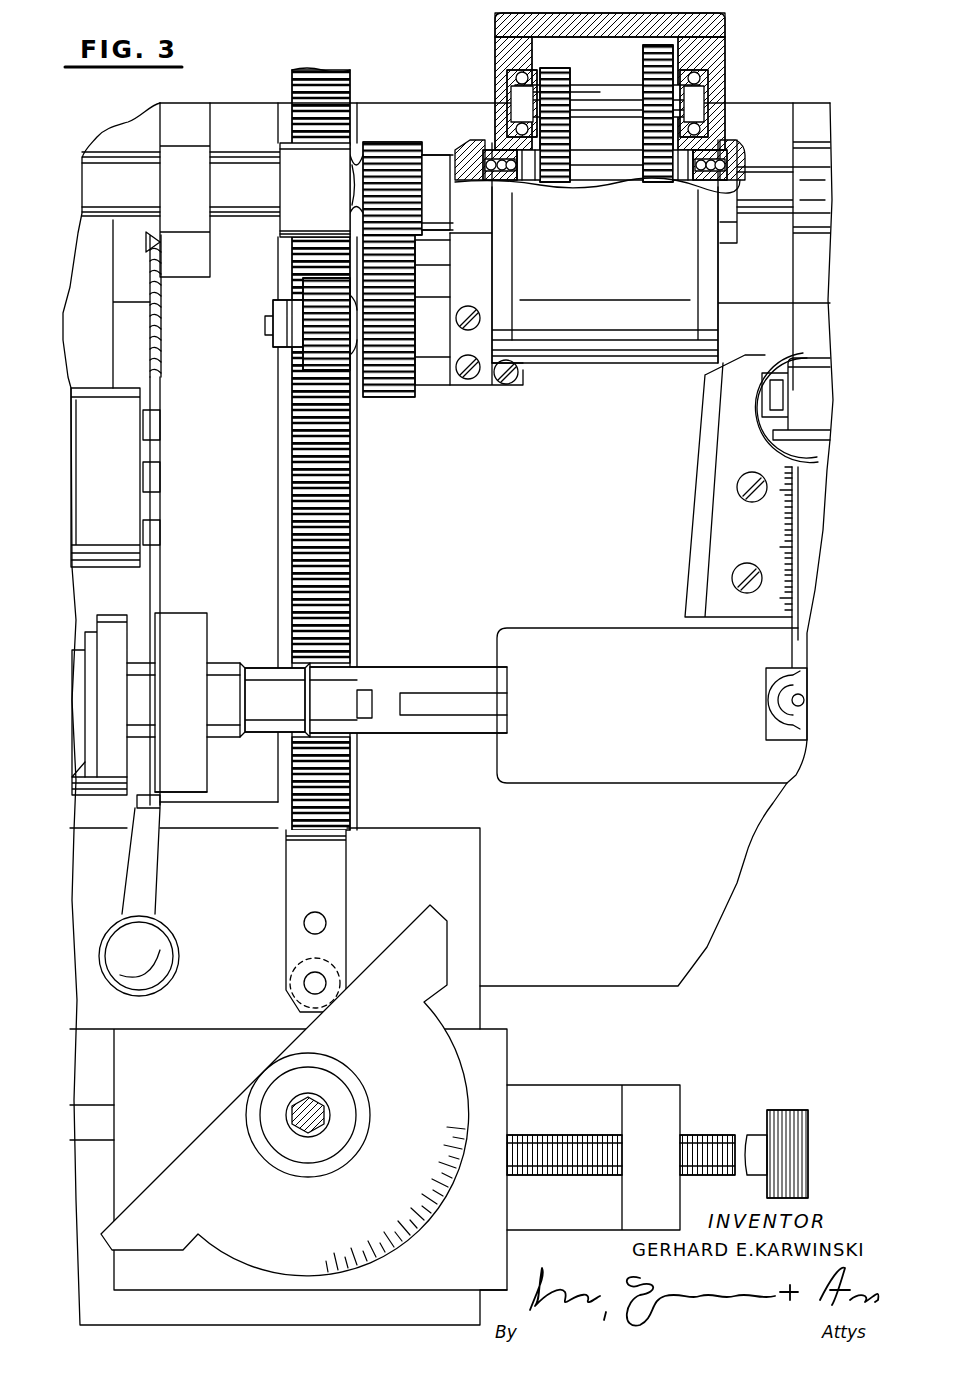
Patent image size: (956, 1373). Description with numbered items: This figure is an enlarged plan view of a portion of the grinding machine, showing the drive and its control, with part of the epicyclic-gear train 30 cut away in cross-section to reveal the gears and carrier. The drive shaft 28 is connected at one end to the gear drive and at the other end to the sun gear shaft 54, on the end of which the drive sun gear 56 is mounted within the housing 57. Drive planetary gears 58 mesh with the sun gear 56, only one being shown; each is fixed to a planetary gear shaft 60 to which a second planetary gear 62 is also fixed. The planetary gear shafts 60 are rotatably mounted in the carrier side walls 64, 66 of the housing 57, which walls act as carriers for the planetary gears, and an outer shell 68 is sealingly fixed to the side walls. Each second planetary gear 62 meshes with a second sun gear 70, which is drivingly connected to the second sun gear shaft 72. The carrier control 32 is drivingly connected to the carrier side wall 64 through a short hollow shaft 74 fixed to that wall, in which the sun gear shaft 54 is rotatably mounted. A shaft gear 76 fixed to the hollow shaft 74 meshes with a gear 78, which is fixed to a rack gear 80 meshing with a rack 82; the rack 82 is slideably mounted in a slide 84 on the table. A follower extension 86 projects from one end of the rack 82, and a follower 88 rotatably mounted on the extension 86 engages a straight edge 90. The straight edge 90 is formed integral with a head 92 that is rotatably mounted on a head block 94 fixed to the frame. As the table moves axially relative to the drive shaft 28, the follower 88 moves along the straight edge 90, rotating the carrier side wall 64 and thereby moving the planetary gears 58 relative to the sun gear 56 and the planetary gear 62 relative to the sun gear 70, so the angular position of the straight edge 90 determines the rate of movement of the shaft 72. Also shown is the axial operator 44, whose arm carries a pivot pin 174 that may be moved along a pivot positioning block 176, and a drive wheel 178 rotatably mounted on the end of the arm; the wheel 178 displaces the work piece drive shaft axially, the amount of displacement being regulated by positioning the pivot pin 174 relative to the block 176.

The drive shaft 28 is at (240, 167).
The epicyclic-gear train 30 is at (650, 79).
The carrier control 32 is at (330, 449).
The axial operator 44 is at (688, 465).
The sun gear shaft 54 is at (475, 157).
The drive sun gear 56 is at (572, 197).
The housing 57 is at (478, 38).
The drive planetary gears 58 is at (563, 118).
The planetary gear shaft 60 is at (603, 95).
The second planetary gear 62 is at (653, 68).
The carrier side wall 64 is at (505, 82).
The carrier side wall 66 is at (718, 87).
The outer shell 68 is at (558, 23).
The second sun gear 70 is at (640, 182).
The second sun gear shaft 72 is at (770, 177).
The hollow shaft 74 is at (450, 157).
The shaft gear 76 is at (414, 207).
The gear 78 is at (415, 397).
The rack gear 80 is at (302, 350).
The rack 82 is at (352, 585).
The slide 84 is at (280, 430).
The follower extension 86 is at (325, 888).
The follower 88 is at (288, 996).
The straight edge 90 is at (257, 1078).
The head 92 is at (453, 1076).
The head block 94 is at (495, 1133).
The pivot pin 174 is at (793, 512).
The pivot positioning block 176 is at (727, 547).
The drive wheel 178 is at (770, 430).